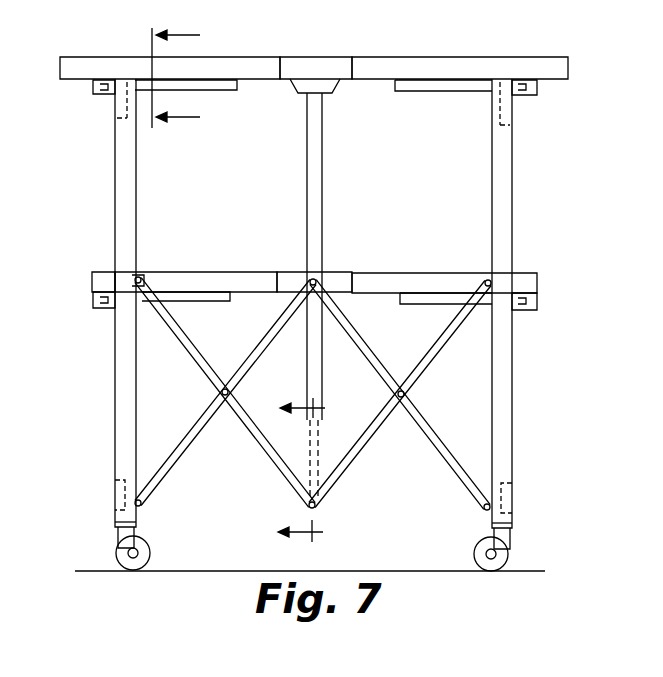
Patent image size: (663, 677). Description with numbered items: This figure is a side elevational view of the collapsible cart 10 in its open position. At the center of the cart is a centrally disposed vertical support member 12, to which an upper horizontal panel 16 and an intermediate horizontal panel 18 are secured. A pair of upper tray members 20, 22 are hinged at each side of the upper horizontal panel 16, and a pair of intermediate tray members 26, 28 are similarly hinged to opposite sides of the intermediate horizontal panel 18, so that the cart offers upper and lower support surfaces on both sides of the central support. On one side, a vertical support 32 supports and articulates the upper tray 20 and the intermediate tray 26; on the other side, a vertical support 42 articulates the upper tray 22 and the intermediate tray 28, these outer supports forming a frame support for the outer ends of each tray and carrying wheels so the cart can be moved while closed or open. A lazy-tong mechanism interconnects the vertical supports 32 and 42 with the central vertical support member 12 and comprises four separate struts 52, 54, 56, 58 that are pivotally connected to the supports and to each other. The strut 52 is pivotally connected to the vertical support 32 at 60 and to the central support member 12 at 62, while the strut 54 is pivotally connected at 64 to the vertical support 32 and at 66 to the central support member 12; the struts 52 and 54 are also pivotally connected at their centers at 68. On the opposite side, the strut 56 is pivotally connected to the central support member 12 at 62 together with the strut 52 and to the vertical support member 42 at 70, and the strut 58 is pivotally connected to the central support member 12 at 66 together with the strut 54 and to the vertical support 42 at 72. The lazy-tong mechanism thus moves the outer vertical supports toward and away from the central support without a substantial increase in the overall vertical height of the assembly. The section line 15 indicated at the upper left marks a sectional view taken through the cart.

The collapsible cart 10 is at (278, 460).
The vertical support member 12 is at (323, 172).
The section line 15- 15 is at (199, 75).
The upper horizontal panel 16 is at (318, 57).
The intermediate horizontal panel 18 is at (340, 270).
The upper tray member 20 is at (252, 56).
The upper tray member 22 is at (483, 57).
The intermediate tray member 26 is at (229, 268).
The intermediate tray member 28 is at (432, 268).
The vertical support 32 is at (140, 275).
The vertical support 42 is at (512, 425).
The strut 52 is at (190, 450).
The strut 54 is at (192, 330).
The strut 56 is at (373, 350).
The strut 58 is at (428, 381).
The pivotal connection 60 is at (140, 508).
The pivotal connection 62 is at (318, 276).
The pivotal connection 64 is at (145, 306).
The pivotal connection 66 is at (305, 509).
The pivotal connection 68 is at (229, 385).
The pivotal connection 70 is at (484, 511).
The pivotal connection 72 is at (492, 283).